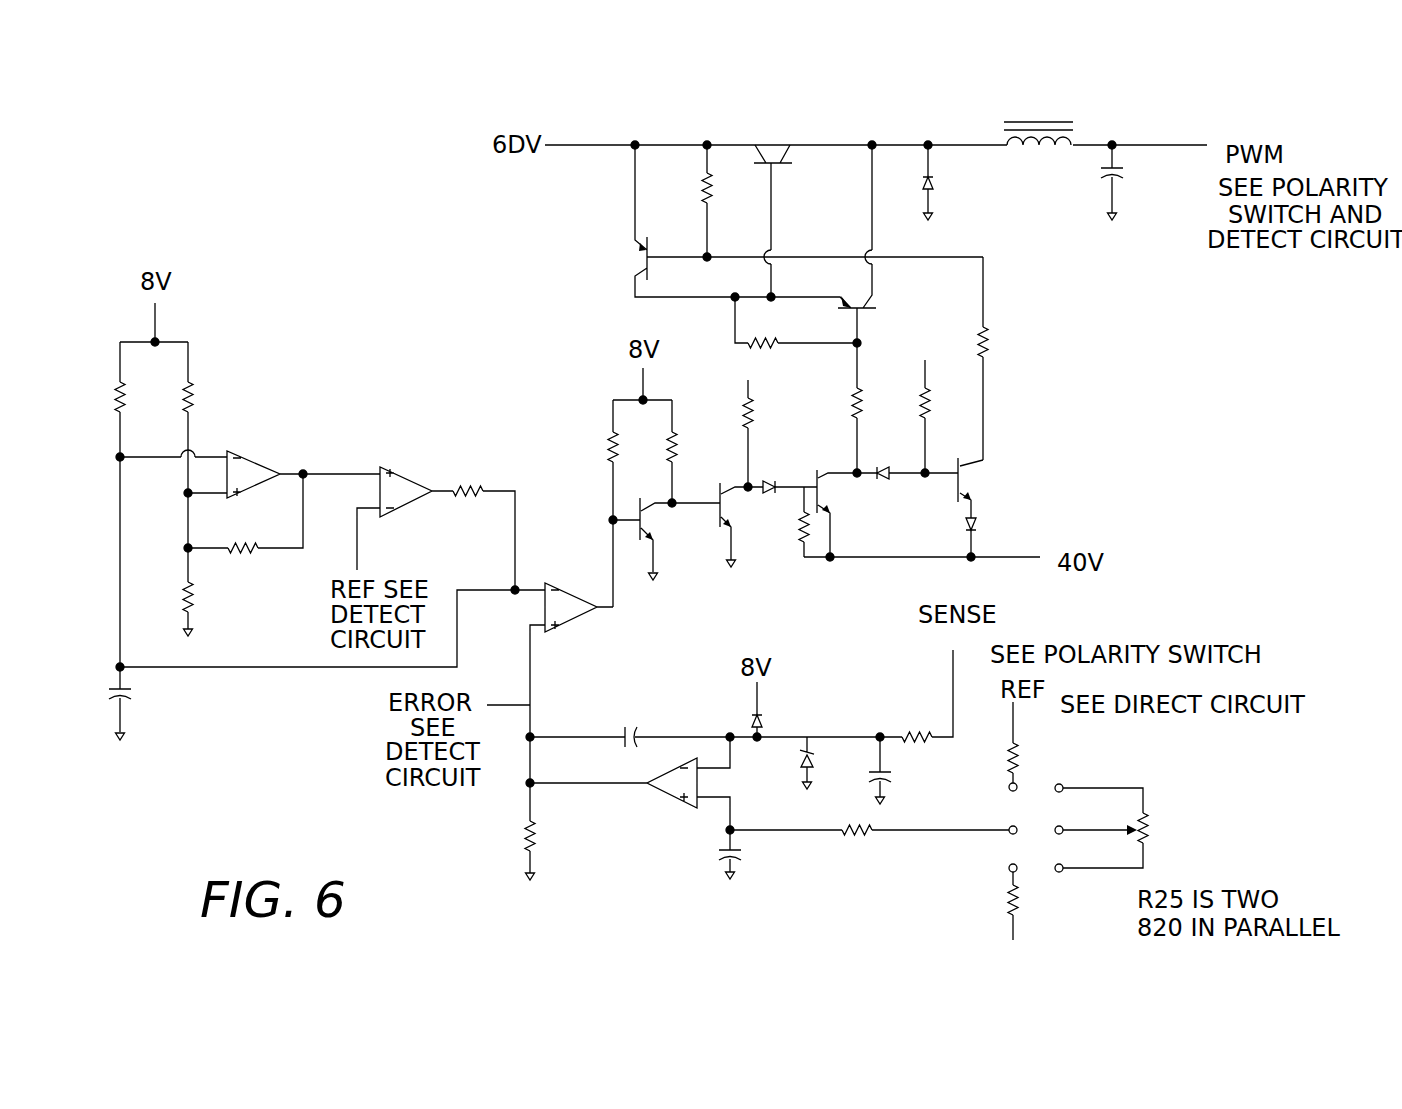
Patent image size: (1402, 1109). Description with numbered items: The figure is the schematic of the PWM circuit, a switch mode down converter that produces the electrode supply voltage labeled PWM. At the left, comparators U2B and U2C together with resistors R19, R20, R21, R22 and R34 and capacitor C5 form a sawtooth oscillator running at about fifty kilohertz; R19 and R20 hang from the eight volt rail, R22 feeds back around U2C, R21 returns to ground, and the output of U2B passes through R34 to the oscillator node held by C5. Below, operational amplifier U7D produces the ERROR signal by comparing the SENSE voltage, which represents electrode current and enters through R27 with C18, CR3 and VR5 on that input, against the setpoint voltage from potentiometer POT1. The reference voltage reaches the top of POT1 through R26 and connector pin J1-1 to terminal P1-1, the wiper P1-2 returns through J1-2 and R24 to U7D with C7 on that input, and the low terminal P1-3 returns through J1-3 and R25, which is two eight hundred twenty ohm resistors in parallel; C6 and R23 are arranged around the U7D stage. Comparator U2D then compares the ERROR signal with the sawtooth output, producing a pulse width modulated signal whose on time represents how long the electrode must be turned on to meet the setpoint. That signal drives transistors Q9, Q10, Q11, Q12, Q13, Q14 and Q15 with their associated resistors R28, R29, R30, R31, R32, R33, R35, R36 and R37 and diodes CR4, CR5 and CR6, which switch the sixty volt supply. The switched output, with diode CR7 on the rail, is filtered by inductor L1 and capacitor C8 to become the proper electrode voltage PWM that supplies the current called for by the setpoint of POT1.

The transistor Q15 is at (775, 205).
The resistor R37 is at (735, 201).
The transistor Q14 is at (650, 221).
The transistor Q13 is at (873, 250).
The resistor R36 is at (796, 338).
The resistor R32 is at (883, 408).
The resistor R30 is at (778, 433).
The resistor R33 is at (952, 416).
The resistor R35 is at (1016, 358).
The diode CR7 is at (958, 182).
The inductor L1 is at (1038, 117).
The capacitor C8 is at (1137, 182).
The resistor R19 is at (86, 504).
The resistor R20 is at (217, 417).
The comparator U2C is at (293, 425).
The resistor R22 is at (245, 513).
The resistor R21 is at (220, 594).
The comparator U2B is at (400, 527).
The resistor R34 is at (490, 523).
The comparator U2D is at (560, 652).
The resistor R28 is at (582, 503).
The resistor R29 is at (702, 451).
The transistor Q9 is at (668, 539).
The transistor Q10 is at (736, 525).
The diode CR4 is at (782, 472).
The resistor R31 is at (815, 553).
The transistor Q11 is at (875, 513).
The diode CR5 is at (907, 459).
The transistor Q12 is at (1023, 482).
The diode CR6 is at (1005, 533).
The resistor R23 is at (564, 808).
The capacitor C6 is at (630, 725).
The operational amplifier U7D is at (670, 838).
The capacitor C7 is at (754, 860).
The diode CR3 is at (788, 709).
The zener diode VR5 is at (835, 763).
The capacitor C18 is at (909, 773).
The resistor R27 is at (916, 696).
The resistor R24 is at (869, 849).
The connector pin J1-1 is at (986, 790).
The connector pin J1-2 is at (986, 823).
The connector pin J1-3 is at (986, 862).
The resistor R26 is at (1044, 742).
The resistor R25 is at (1046, 909).
The potentiometer pin P1-1 is at (1093, 778).
The potentiometer pin P1-2 is at (1092, 819).
The potentiometer pin P1-3 is at (1092, 856).
The potentiometer POT1 is at (1149, 828).
The capacitor C5 is at (166, 703).